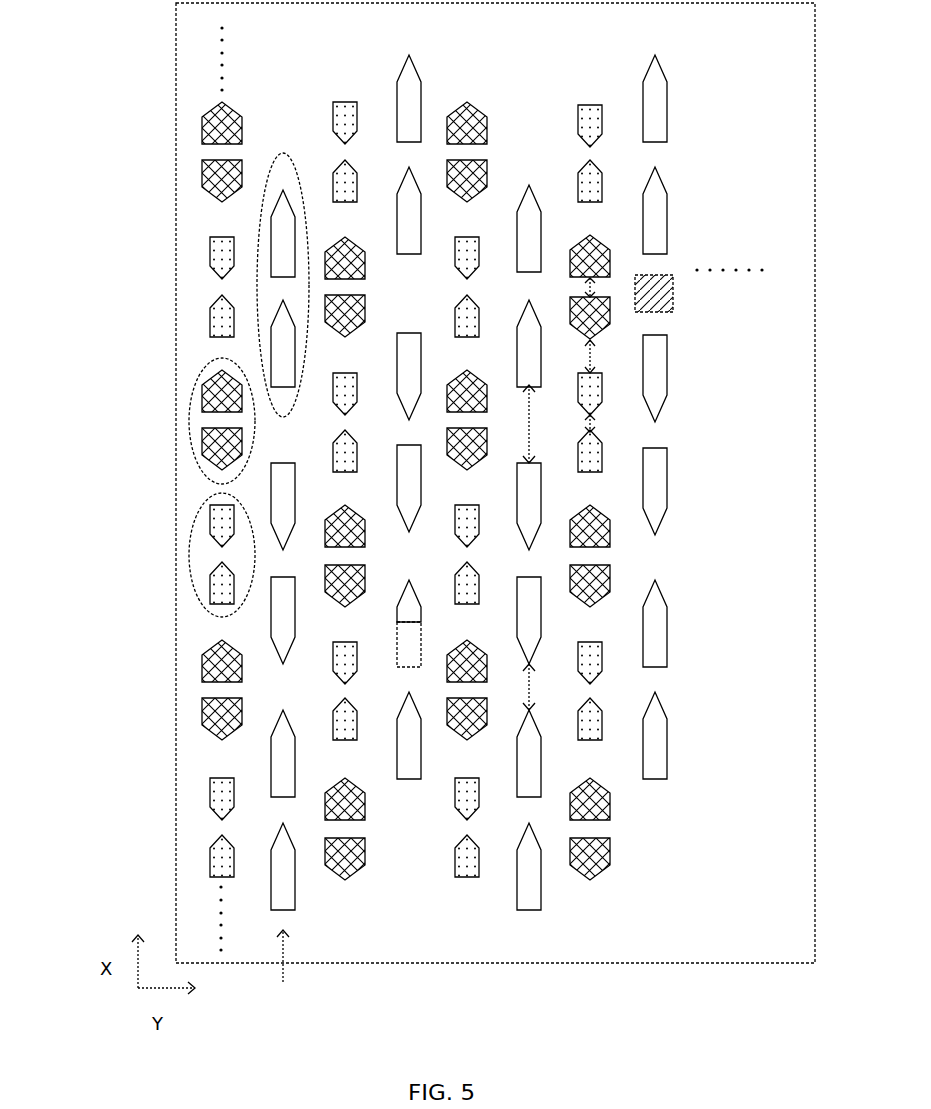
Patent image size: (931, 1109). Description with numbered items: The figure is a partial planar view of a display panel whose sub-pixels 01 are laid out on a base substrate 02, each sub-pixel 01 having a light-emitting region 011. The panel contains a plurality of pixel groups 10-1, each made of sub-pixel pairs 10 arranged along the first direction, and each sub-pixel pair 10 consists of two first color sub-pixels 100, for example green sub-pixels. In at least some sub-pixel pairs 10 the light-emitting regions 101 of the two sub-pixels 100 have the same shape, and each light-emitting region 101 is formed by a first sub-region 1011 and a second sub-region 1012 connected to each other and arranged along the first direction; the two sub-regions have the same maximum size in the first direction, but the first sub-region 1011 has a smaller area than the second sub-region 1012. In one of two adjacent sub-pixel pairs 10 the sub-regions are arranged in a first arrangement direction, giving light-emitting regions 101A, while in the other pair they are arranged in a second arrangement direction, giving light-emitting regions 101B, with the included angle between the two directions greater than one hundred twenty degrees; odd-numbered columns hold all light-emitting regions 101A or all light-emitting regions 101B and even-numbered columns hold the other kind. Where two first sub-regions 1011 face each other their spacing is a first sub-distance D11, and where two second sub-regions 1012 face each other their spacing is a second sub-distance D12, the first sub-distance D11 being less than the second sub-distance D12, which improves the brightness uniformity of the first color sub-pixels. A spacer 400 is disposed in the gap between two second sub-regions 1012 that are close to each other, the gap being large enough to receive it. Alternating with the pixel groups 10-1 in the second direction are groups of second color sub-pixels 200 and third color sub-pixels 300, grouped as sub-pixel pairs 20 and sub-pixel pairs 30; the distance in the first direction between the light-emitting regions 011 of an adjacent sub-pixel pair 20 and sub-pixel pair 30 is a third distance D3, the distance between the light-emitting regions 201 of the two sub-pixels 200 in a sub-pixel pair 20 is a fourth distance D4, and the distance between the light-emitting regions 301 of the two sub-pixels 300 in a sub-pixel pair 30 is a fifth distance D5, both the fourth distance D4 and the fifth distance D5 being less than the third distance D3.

The base substrate 02 is at (202, 28).
The light-emitting region of sub-pixel 200 201 is at (162, 120).
The sub-pixel 200 is at (215, 125).
The sub-pixel pair 10 is at (288, 155).
The light-emitting region 011 is at (402, 87).
The sub-pixel 01 is at (467, 112).
The light-emitting region of sub-pixel 100 101 is at (191, 233).
The sub-pixel 100 is at (282, 240).
The light-emitting region of sub-pixel 300 301 is at (160, 257).
The sub-pixel 300 is at (215, 265).
The sub-pixel pair 20 is at (192, 403).
The sub-pixel pair 30 is at (192, 518).
The spacer 400 is at (663, 307).
The light-emitting region 101B is at (658, 478).
The light-emitting region 101A is at (659, 625).
The first sub-region 1011 is at (405, 612).
The second sub-region 1012 is at (407, 643).
The pixel group 10-1 is at (284, 971).
The second sub-distance D12 is at (515, 424).
The first sub-distance D11 is at (516, 687).
The third distance D3 is at (607, 356).
The fourth distance D4 is at (607, 290).
The fifth distance D5 is at (607, 423).